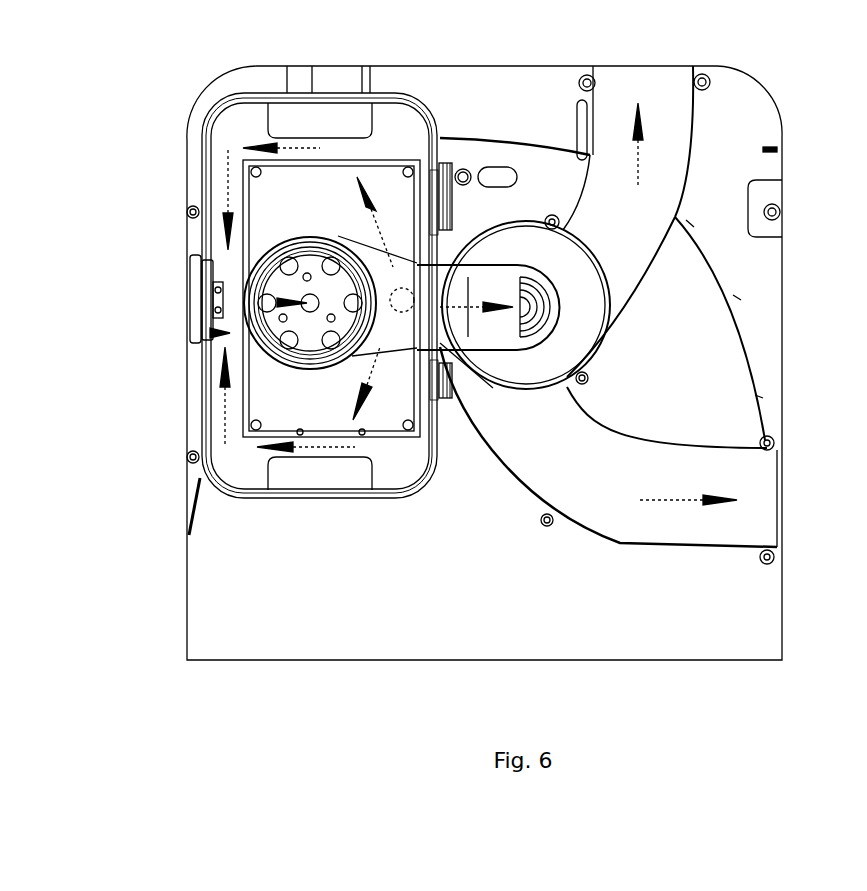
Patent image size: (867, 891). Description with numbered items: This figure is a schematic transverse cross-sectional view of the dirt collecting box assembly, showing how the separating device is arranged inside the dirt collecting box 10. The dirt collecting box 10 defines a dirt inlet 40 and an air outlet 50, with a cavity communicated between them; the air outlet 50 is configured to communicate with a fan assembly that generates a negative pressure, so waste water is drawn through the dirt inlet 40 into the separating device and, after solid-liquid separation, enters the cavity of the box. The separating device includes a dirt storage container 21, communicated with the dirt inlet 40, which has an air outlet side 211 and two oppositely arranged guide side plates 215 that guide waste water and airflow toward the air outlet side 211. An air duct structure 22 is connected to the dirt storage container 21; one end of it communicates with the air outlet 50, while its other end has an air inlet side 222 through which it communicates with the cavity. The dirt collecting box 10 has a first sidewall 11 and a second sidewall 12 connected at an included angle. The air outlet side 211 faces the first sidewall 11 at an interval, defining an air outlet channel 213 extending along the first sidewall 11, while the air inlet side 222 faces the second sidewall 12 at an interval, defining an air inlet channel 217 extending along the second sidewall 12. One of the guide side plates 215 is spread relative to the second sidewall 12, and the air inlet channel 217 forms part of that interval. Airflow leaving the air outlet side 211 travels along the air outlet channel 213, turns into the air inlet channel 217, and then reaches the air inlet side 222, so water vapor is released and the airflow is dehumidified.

The dirt collecting box 10 is at (287, 90).
The first sidewall 11 is at (252, 100).
The second sidewall 12 is at (205, 368).
The dirt storage container 21 is at (323, 437).
The air duct structure 22 is at (300, 228).
The air outlet side 211 is at (380, 163).
The air outlet channel 213 is at (338, 152).
The guide side plates 215 is at (420, 262).
The air inlet channel 217 is at (233, 330).
The air inlet side 222 is at (250, 278).
The dirt inlet 40 is at (402, 313).
The air outlet 50 is at (460, 330).